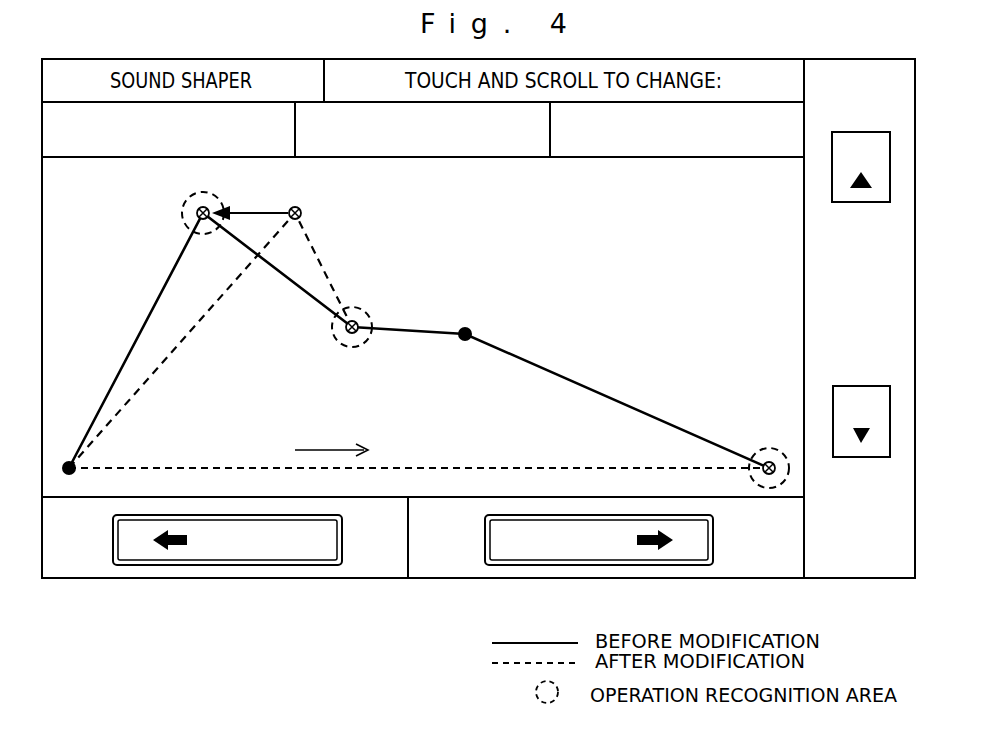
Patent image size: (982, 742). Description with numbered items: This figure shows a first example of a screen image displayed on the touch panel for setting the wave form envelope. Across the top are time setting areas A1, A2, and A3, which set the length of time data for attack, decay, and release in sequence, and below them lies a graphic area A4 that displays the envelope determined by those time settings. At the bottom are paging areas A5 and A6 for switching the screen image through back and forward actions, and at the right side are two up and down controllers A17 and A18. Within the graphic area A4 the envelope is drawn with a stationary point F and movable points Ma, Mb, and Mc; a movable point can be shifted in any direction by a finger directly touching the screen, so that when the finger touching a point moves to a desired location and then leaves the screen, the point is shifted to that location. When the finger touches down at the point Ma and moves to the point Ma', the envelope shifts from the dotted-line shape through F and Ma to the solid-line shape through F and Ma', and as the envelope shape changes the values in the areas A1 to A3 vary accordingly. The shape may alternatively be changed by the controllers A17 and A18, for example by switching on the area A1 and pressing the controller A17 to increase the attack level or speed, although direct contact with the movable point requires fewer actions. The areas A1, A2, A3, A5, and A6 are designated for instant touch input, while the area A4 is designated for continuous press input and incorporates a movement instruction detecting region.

The time setting area A1 is at (97, 157).
The time setting area A2 is at (437, 157).
The time setting area A3 is at (657, 157).
The graphic area A4 is at (442, 327).
The paging area A5 is at (215, 565).
The paging area A6 is at (515, 565).
The up controller A17 is at (860, 132).
The down controller A18 is at (853, 457).
The movable point Ma is at (331, 230).
The movable point Ma' is at (173, 222).
The movable point Mb is at (358, 320).
The movable point Mc is at (765, 460).
The stationary point F is at (76, 463).